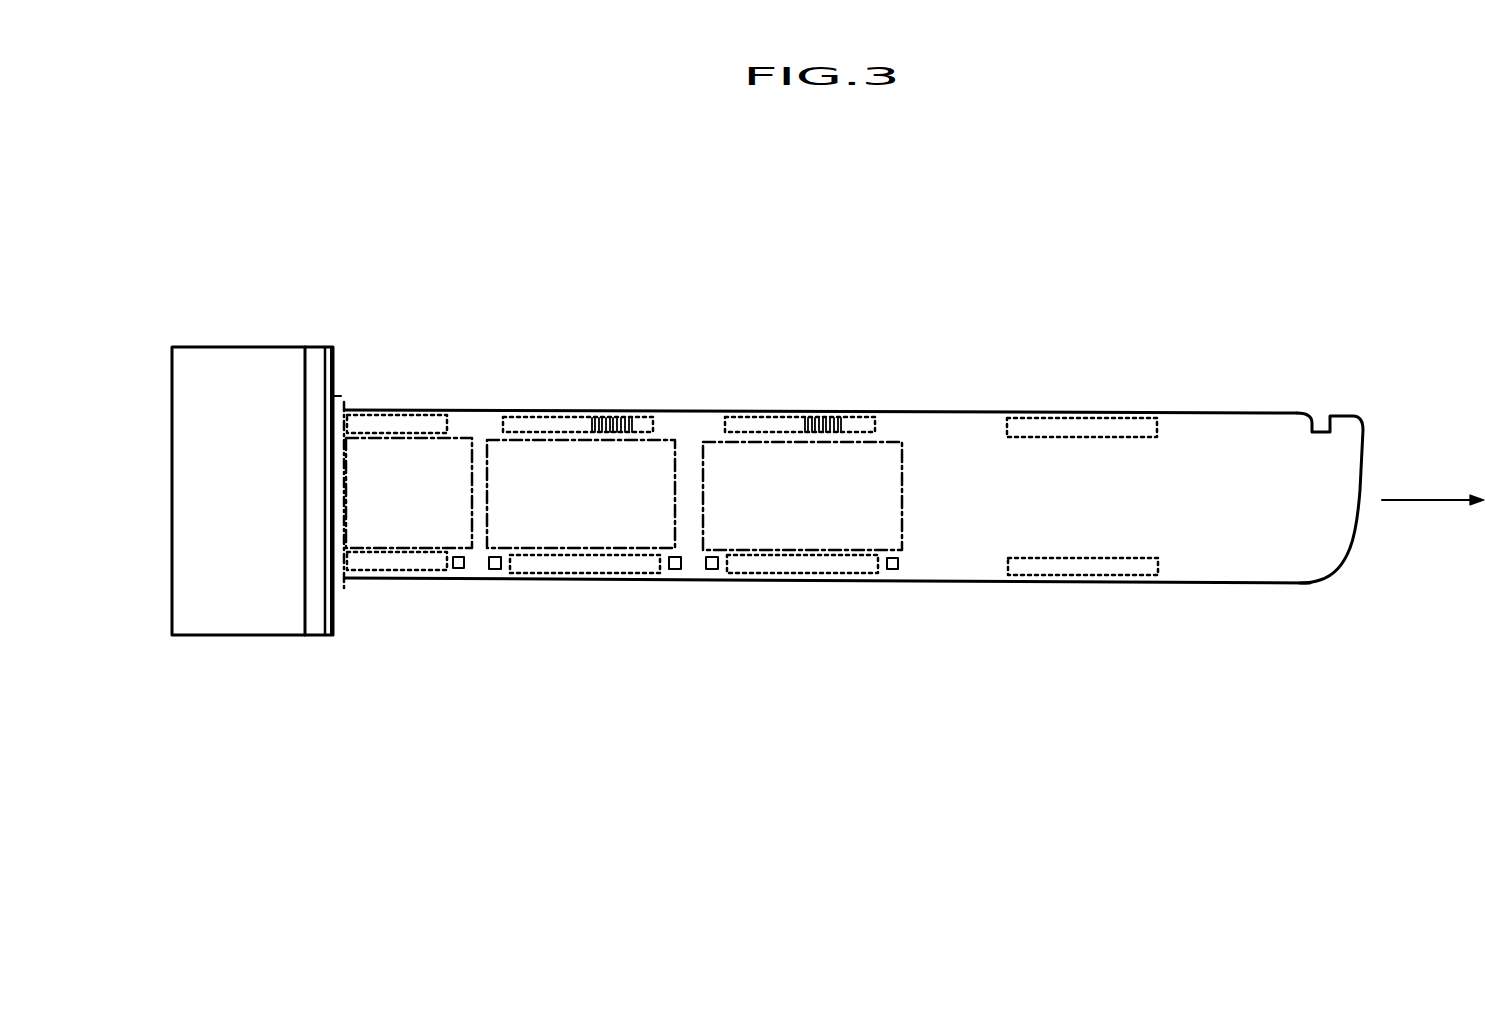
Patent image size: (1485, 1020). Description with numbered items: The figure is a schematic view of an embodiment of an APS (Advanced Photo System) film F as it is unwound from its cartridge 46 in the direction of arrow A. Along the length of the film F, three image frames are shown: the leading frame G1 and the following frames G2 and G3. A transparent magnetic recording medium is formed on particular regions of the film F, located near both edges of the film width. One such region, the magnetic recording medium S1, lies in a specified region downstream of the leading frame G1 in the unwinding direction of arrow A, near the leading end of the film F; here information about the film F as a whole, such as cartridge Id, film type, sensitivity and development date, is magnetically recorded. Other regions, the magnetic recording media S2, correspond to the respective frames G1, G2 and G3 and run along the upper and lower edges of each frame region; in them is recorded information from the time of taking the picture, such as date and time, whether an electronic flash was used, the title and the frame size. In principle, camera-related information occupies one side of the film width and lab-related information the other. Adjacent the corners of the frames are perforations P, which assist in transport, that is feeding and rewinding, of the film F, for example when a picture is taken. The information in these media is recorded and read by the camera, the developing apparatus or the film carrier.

The cartridge 46 is at (278, 395).
The APS film F is at (1220, 528).
The arrow A is at (1433, 484).
The leading frame G1 is at (867, 478).
The frame G2 is at (647, 483).
The frame G3 is at (435, 477).
The magnetic recording medium S1 is at (1048, 418).
The magnetic recording medium S2 is at (358, 410).
The perforation P is at (457, 570).